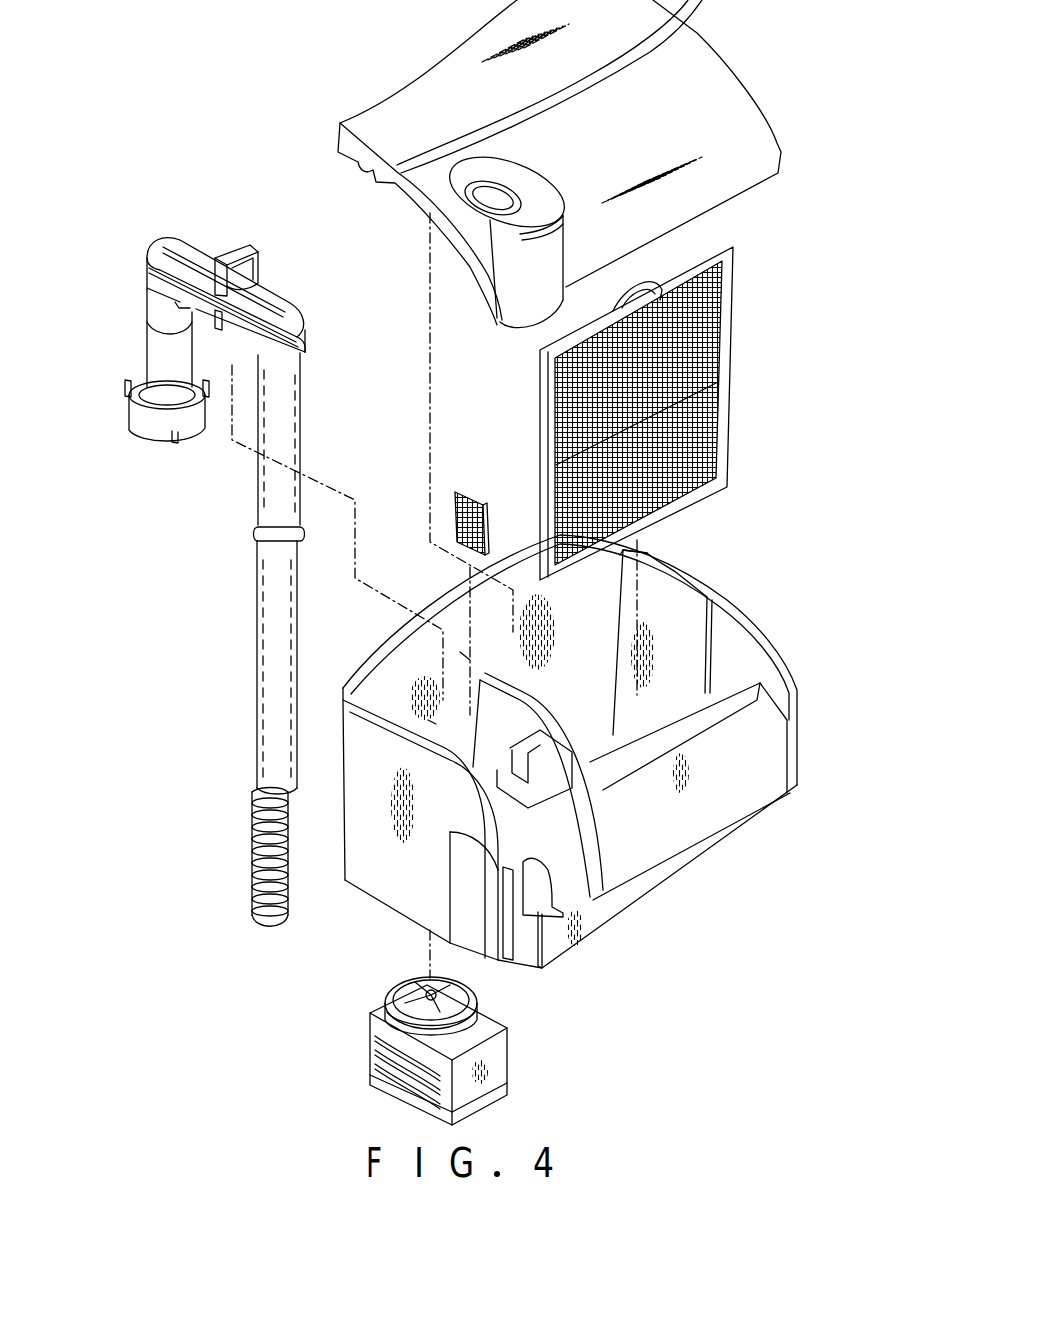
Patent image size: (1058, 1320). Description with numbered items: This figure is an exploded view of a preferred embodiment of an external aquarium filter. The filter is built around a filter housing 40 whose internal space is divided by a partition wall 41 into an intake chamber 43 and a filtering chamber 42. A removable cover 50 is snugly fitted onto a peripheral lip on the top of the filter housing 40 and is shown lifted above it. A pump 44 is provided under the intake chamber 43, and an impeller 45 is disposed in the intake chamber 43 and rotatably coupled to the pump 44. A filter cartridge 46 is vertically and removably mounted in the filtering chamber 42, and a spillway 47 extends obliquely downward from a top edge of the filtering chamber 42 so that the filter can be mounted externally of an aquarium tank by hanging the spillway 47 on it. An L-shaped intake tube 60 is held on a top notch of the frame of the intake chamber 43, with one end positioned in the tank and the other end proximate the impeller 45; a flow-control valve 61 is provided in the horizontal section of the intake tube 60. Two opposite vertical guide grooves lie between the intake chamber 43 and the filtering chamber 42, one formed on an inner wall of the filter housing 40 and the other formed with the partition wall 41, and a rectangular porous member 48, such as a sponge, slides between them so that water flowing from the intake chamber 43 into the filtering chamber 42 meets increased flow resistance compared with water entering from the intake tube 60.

The filter housing 40 is at (712, 568).
The partition wall 41 is at (470, 660).
The filtering chamber 42 is at (590, 680).
The intake chamber 43 is at (430, 722).
The pump 44 is at (502, 1068).
The impeller 45 is at (412, 985).
The filter cartridge 46 is at (732, 380).
The spillway 47 is at (690, 815).
The porous member 48 is at (470, 502).
The cover 50 is at (440, 52).
The intake tube 60 is at (305, 397).
The flow-control valve 61 is at (233, 262).